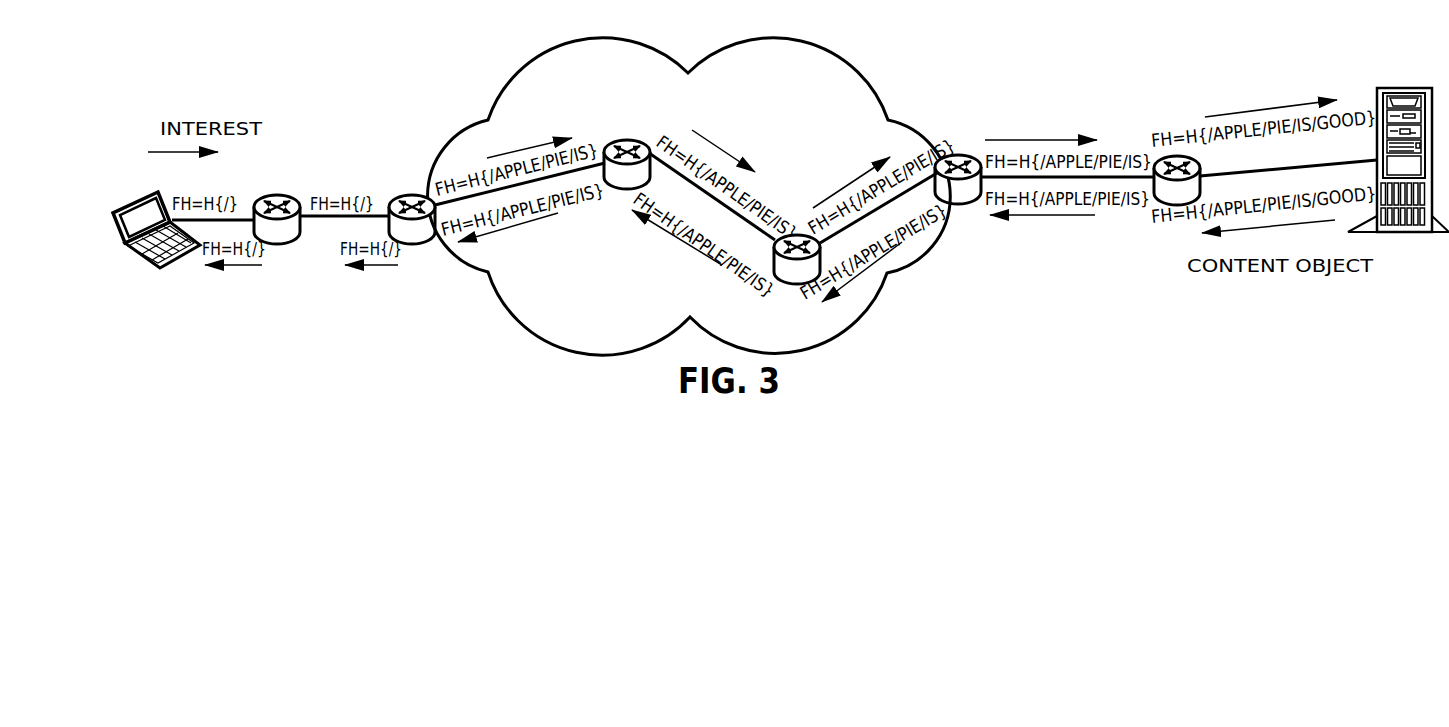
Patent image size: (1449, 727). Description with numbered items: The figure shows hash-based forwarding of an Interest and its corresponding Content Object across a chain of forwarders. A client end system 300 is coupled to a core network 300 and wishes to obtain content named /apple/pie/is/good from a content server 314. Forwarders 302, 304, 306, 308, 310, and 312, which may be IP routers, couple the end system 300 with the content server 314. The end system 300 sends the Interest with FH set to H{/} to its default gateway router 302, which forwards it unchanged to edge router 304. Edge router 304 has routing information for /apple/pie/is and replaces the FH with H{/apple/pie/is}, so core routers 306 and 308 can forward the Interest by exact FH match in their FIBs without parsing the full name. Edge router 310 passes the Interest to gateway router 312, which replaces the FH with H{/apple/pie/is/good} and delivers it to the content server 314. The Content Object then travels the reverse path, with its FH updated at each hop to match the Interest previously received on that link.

The client end system 300 is at (140, 198).
The default gateway router 302 is at (255, 203).
The edge router 304 is at (391, 203).
The core router 306 is at (611, 143).
The core router 308 is at (793, 233).
The edge router 310 is at (957, 155).
The gateway router 312 is at (1155, 157).
The content server 314 is at (1384, 86).